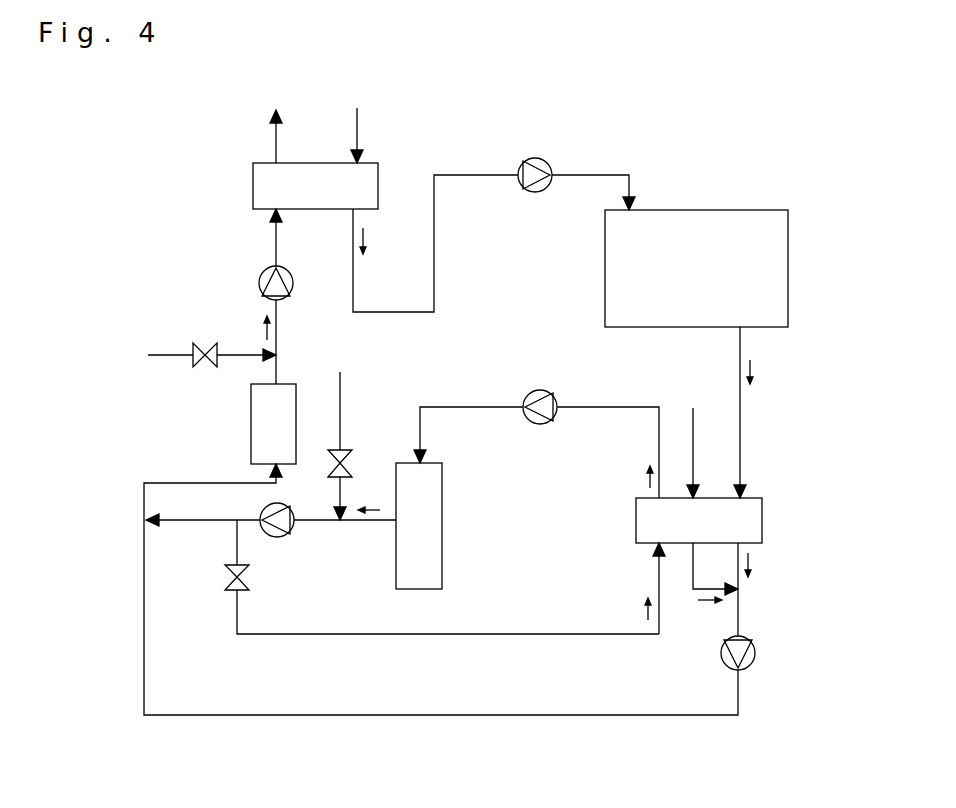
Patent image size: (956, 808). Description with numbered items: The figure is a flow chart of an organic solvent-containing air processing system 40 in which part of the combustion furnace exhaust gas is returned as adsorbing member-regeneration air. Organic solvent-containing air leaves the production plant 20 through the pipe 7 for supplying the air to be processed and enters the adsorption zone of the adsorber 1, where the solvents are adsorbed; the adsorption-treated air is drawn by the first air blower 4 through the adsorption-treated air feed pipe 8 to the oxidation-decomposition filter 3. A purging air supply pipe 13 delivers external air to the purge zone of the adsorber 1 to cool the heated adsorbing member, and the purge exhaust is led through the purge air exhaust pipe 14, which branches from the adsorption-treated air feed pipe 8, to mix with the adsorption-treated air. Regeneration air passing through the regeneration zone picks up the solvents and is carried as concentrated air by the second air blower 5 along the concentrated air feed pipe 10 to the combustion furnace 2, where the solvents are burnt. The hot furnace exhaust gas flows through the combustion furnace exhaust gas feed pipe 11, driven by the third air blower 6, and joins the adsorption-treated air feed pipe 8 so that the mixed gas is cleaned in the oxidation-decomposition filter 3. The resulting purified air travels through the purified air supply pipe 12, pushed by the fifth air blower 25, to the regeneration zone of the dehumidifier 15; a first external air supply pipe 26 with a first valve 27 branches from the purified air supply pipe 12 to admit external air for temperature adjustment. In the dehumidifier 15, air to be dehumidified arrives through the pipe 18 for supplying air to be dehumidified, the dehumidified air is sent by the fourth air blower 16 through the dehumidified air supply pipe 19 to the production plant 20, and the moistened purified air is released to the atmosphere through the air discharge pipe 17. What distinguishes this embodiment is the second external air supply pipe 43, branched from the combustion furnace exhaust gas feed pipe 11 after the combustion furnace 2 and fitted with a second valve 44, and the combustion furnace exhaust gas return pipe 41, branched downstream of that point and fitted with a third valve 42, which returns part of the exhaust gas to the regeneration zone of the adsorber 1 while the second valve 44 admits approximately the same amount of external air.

The adsorber 1 is at (756, 518).
The combustion furnace 2 is at (430, 510).
The oxidation-decomposition filter 3 is at (250, 432).
The first air blower 4 is at (760, 650).
The second air blower 5 is at (553, 390).
The third air blower 6 is at (283, 540).
The pipe for supplying the air to be processed 7 is at (742, 425).
The adsorption-treated air feed pipe 8 is at (597, 715).
The concentrated air feed pipe 10 is at (490, 407).
The combustion furnace exhaust gas feed pipe 11 is at (367, 523).
The purified air supply pipe 12 is at (275, 240).
The purging air supply pipe 13 is at (693, 463).
The purge air exhaust pipe 14 is at (680, 578).
The dehumidifier 15 is at (257, 186).
The fourth air blower 16 is at (545, 150).
The air discharge pipe 17 is at (276, 140).
The pipe for supplying air to be dehumidified 18 is at (362, 127).
The dehumidified air supply pipe 19 is at (436, 265).
The production plant 20 is at (788, 275).
The fifth air blower 25 is at (252, 278).
The first external air supply pipe 26 is at (172, 360).
The first valve 27 is at (197, 370).
The organic solvent-containing air processing system 40 is at (772, 99).
The combustion furnace exhaust gas return pipe 41 is at (485, 634).
The third valve 42 is at (217, 565).
The second external air supply pipe 43 is at (345, 398).
The second valve 44 is at (350, 440).